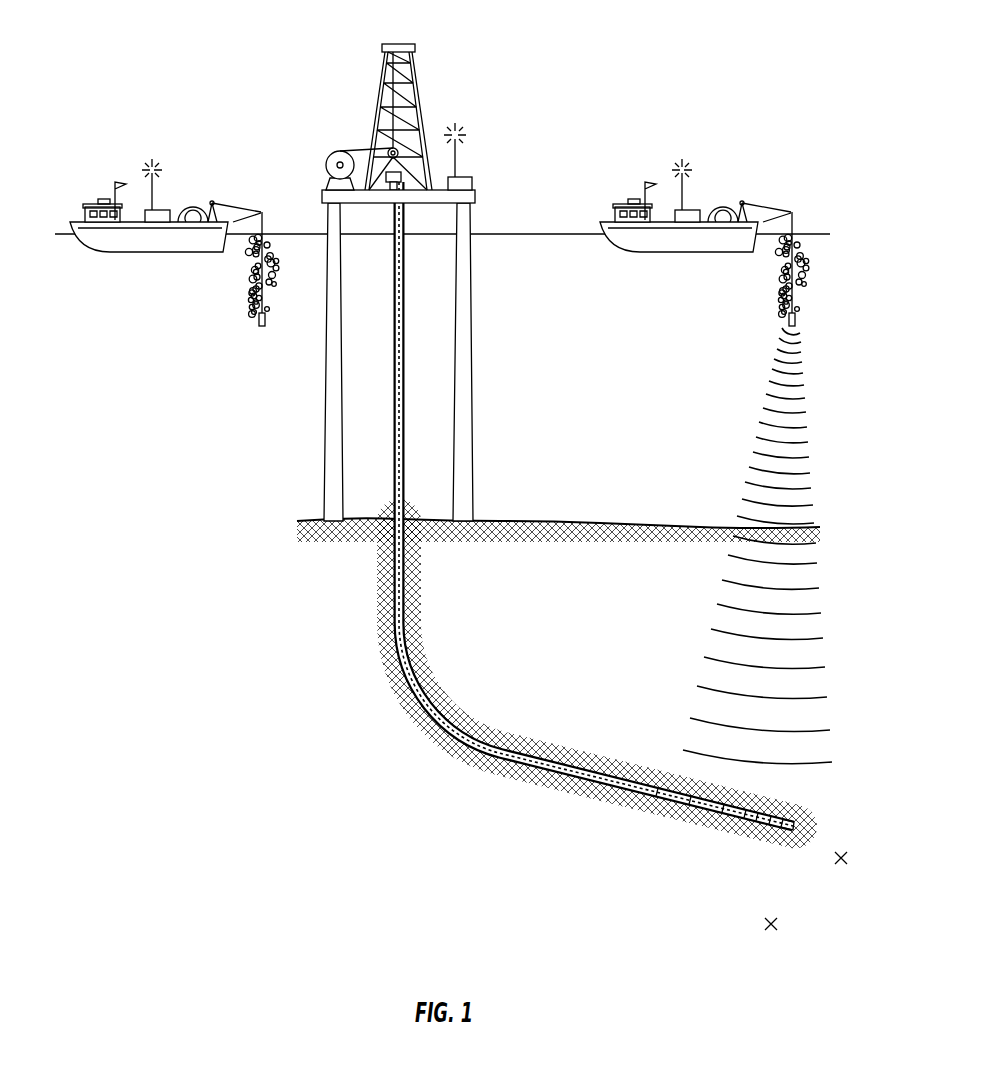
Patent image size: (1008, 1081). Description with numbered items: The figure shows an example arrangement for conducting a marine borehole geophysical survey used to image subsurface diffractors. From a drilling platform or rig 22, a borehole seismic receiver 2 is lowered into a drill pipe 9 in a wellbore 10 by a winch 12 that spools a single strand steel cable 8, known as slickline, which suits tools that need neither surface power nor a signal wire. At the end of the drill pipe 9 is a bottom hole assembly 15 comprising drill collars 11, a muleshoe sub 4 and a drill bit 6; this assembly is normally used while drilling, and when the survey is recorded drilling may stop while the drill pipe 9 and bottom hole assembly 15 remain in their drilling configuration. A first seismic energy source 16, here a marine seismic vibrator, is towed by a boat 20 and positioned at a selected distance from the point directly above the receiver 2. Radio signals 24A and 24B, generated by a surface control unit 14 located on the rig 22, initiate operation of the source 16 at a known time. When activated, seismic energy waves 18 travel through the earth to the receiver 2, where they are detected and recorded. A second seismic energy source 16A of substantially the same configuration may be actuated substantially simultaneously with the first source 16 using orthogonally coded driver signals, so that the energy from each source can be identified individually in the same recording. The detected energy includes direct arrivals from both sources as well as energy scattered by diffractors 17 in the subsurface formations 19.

The borehole seismic receiver 2 is at (746, 821).
The muleshoe sub 4 is at (758, 823).
The drill bit 6 is at (790, 832).
The single strand steel cable (slickline) 8 is at (356, 149).
The drill pipe 9 is at (612, 788).
The wellbore 10 is at (525, 763).
The drill collars 11 is at (724, 812).
The winch 12 is at (331, 159).
The surface control unit 14 is at (474, 183).
The bottom hole assembly (BHA) 15 is at (776, 795).
The first seismic energy source 16 is at (786, 318).
The second seismic energy source 16A is at (260, 318).
The diffractors 17 is at (838, 862).
The seismic energy waves 18 is at (760, 427).
The subsurface formations 19 is at (380, 790).
The boat 20 is at (604, 222).
The drilling platform or rig 22 is at (421, 92).
The radio signal 24A is at (456, 160).
The radio signal 24B is at (684, 188).